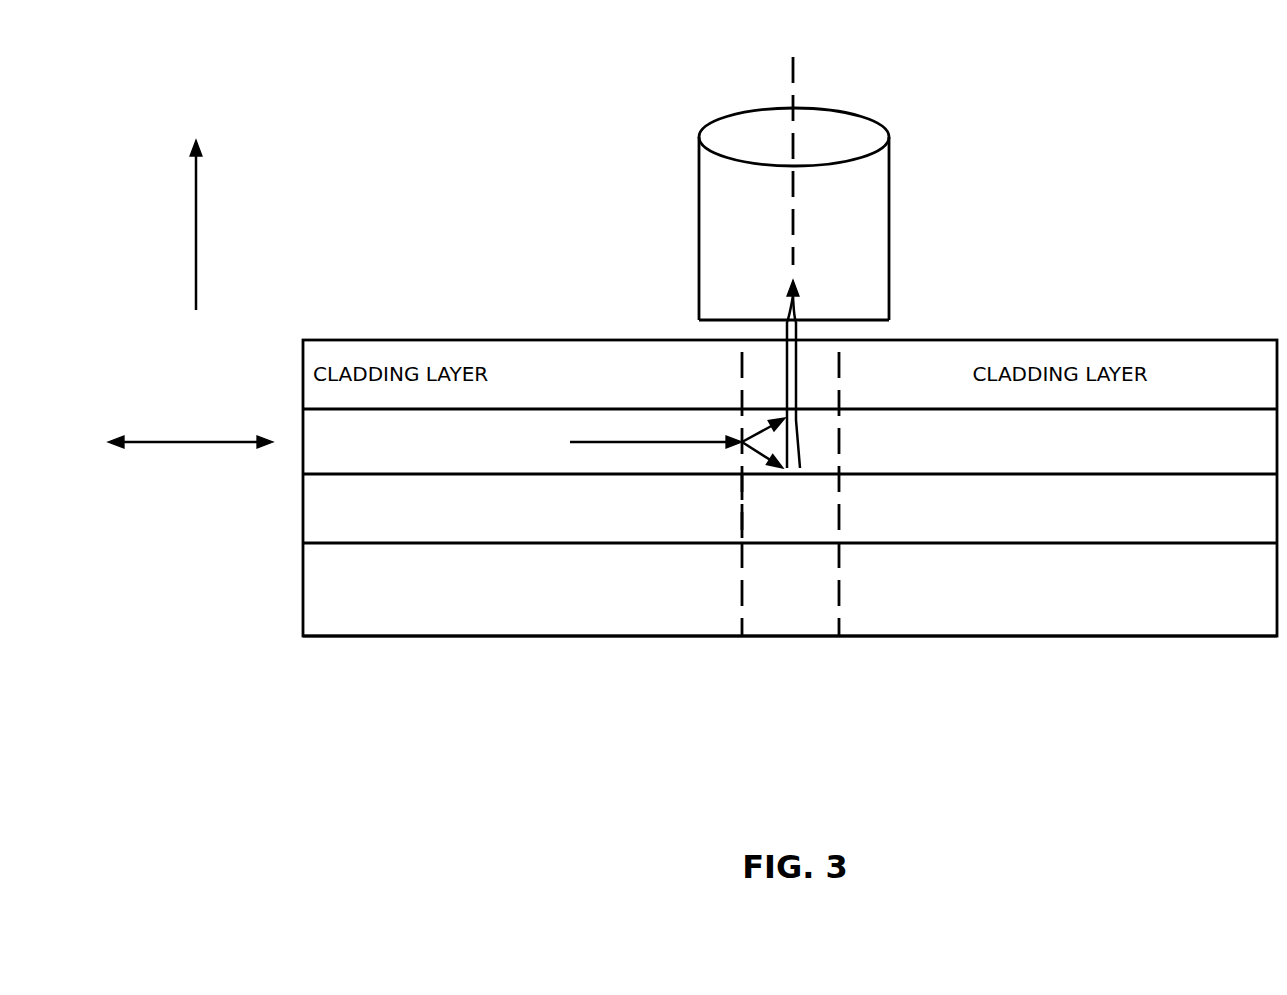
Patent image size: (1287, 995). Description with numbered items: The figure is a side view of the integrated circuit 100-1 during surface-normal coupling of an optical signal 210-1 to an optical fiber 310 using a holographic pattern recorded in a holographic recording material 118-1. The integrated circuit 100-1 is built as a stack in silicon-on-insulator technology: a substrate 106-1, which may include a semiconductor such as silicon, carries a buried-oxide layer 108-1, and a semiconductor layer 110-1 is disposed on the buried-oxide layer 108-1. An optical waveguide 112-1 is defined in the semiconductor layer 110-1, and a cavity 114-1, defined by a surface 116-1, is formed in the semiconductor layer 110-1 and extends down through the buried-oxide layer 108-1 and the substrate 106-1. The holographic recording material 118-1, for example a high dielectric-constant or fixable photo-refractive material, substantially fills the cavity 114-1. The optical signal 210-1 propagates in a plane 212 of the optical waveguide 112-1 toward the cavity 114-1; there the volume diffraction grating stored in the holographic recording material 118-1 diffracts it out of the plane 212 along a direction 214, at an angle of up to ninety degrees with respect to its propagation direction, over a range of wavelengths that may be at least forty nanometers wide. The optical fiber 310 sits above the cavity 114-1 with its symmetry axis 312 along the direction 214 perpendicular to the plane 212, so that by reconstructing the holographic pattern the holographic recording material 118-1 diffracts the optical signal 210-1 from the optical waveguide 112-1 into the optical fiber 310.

The integrated circuit 100-1 is at (1065, 97).
The substrate 106-1 is at (790, 601).
The buried-oxide layer 108-1 is at (790, 513).
The semiconductor layer 110-1 is at (548, 432).
The optical waveguide 112-1 is at (739, 439).
The cavity 114-1 is at (790, 494).
The surface 116-1 is at (742, 510).
The holographic recording material 118-1 is at (770, 597).
The optical signal 210-1 is at (642, 442).
The plane 212 is at (198, 440).
The direction 214 is at (196, 192).
The optical fiber 310 is at (843, 262).
The symmetry axis 312 is at (790, 74).